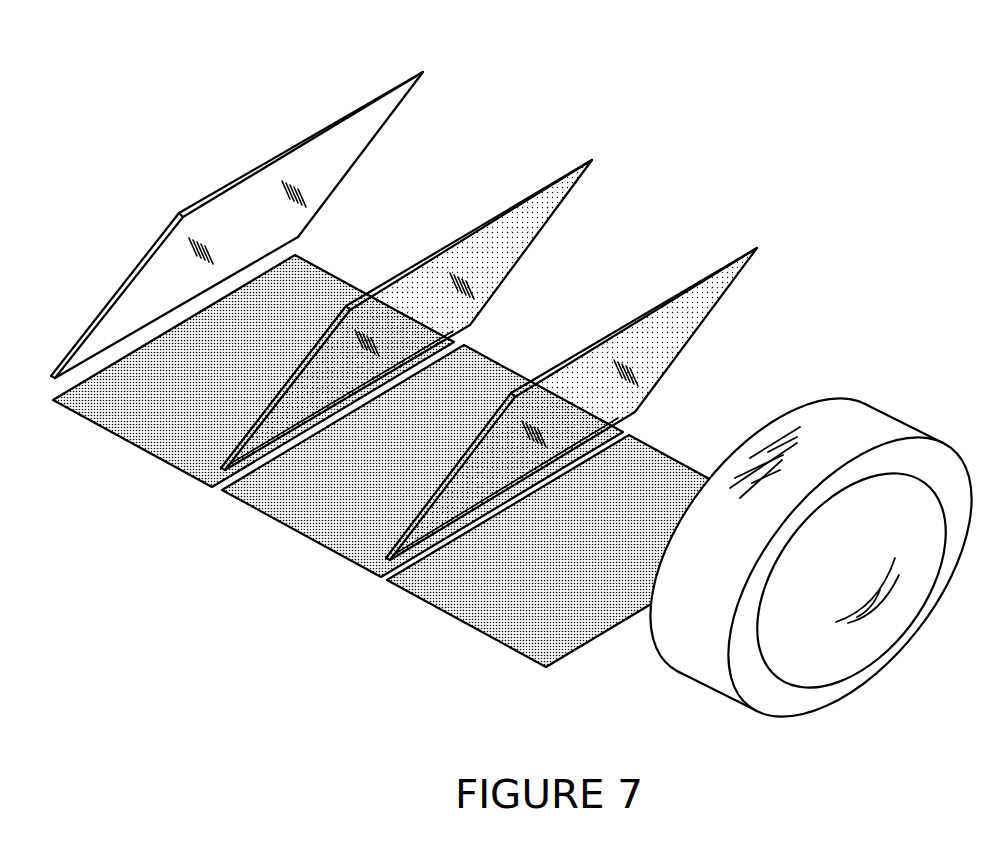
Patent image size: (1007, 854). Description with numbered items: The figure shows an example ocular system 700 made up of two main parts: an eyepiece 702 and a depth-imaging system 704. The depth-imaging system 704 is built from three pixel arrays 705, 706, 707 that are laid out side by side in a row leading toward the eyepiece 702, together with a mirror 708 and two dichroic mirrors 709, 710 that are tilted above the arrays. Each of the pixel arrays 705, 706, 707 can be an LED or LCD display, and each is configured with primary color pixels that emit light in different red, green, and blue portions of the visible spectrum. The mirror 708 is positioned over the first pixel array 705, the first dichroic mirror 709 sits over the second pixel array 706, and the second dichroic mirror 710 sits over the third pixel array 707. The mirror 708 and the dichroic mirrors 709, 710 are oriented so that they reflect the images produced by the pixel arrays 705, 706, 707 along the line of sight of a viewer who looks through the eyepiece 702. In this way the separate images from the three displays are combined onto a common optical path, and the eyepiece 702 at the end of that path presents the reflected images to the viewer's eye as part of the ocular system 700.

The ocular system 700 is at (873, 75).
The eyepiece 702 is at (786, 557).
The depth-imaging system 704 is at (579, 130).
The pixel array 705 is at (241, 374).
The pixel array 706 is at (403, 463).
The pixel array 707 is at (580, 555).
The mirror 708 is at (279, 225).
The dichroic mirror 709 is at (450, 315).
The dichroic mirror 710 is at (616, 404).